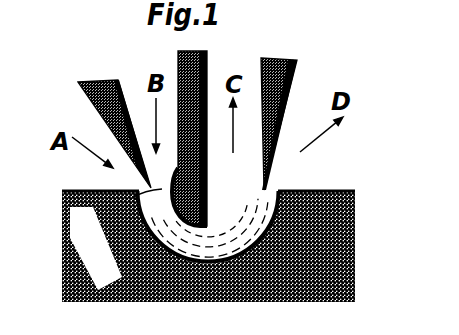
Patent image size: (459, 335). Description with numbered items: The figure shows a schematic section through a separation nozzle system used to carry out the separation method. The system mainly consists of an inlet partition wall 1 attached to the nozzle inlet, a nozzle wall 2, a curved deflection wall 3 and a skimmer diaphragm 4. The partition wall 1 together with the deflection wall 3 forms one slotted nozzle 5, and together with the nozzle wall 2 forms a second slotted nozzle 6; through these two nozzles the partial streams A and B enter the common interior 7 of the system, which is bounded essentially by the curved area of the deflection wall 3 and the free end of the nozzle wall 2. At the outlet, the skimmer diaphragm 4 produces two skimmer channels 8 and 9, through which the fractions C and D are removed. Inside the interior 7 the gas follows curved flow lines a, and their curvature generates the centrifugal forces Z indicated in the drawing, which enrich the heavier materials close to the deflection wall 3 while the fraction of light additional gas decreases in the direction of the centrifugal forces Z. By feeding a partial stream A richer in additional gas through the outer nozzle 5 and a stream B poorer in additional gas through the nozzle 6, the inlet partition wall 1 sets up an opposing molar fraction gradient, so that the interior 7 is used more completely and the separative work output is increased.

The inlet partition wall 1 is at (98, 80).
The nozzle wall 2 is at (181, 62).
The deflection wall 3 is at (203, 288).
The skimmer diaphragm 4 is at (283, 58).
The slotted nozzle 5 is at (128, 201).
The slotted nozzle 6 is at (161, 190).
The common interior 7 is at (208, 237).
The skimmer channel 8 is at (245, 188).
The skimmer channel 9 is at (320, 185).
The flow lines a is at (258, 232).
The centrifugal forces Z is at (229, 243).